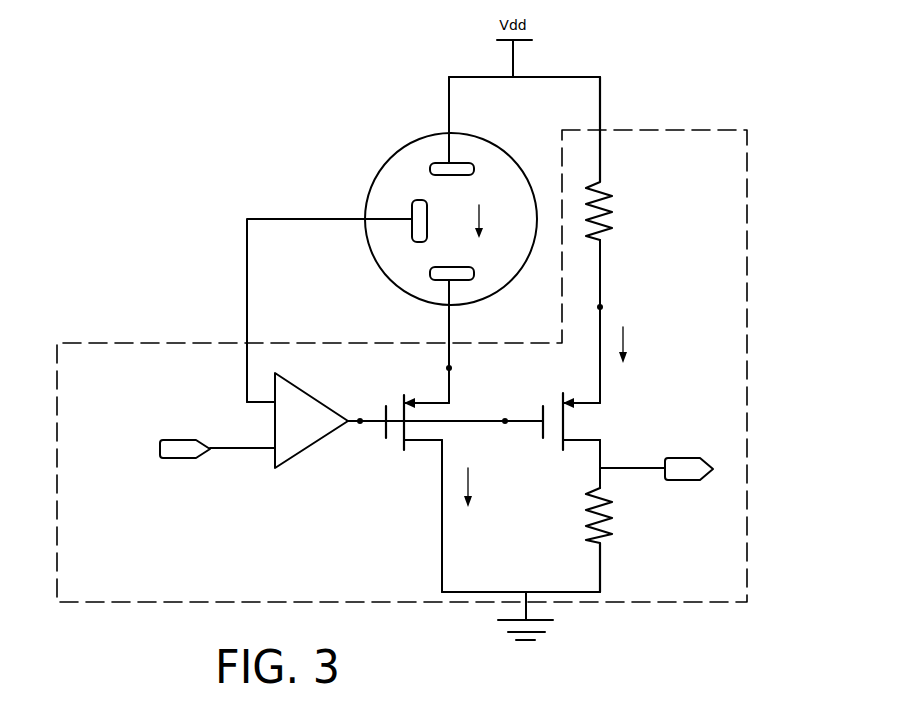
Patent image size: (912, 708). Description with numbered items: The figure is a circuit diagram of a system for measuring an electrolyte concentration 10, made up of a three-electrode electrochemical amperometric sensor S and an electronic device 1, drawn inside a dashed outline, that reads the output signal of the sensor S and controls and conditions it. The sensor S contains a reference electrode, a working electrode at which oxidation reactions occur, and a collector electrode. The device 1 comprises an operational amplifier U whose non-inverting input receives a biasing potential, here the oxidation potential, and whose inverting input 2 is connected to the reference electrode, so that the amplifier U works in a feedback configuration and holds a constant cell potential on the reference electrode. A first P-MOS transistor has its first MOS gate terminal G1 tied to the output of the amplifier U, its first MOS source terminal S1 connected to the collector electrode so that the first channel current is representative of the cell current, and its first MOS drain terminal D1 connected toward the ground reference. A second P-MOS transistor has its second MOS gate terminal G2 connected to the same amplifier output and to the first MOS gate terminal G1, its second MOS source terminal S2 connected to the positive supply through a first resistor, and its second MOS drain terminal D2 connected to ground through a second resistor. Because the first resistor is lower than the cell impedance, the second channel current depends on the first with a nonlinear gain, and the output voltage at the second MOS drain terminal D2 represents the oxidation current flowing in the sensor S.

The system for measuring an electrolyte concentration 10 is at (233, 178).
The three-electrode electrochemical amperometric sensor S is at (412, 185).
The electronic device 1 is at (712, 342).
The inverting input 2 is at (245, 403).
The operational amplifier U is at (312, 428).
The first MOS gate terminal G1 is at (360, 421).
The first MOS source terminal S1 is at (449, 368).
The first MOS drain terminal D1 is at (442, 548).
The second MOS gate terminal G2 is at (505, 421).
The second MOS source terminal S2 is at (605, 307).
The second MOS drain terminal D2 is at (598, 468).